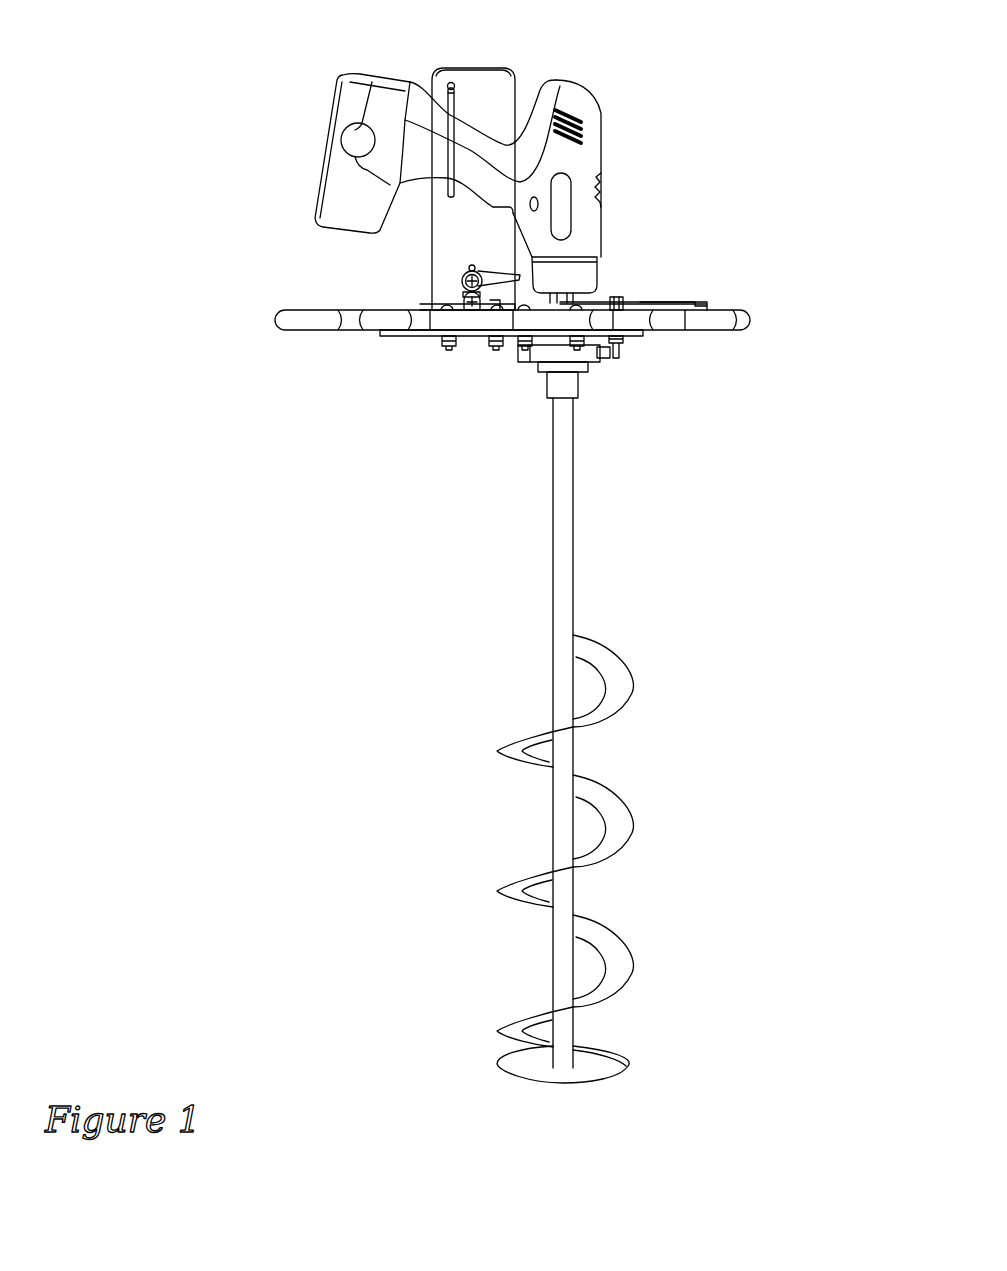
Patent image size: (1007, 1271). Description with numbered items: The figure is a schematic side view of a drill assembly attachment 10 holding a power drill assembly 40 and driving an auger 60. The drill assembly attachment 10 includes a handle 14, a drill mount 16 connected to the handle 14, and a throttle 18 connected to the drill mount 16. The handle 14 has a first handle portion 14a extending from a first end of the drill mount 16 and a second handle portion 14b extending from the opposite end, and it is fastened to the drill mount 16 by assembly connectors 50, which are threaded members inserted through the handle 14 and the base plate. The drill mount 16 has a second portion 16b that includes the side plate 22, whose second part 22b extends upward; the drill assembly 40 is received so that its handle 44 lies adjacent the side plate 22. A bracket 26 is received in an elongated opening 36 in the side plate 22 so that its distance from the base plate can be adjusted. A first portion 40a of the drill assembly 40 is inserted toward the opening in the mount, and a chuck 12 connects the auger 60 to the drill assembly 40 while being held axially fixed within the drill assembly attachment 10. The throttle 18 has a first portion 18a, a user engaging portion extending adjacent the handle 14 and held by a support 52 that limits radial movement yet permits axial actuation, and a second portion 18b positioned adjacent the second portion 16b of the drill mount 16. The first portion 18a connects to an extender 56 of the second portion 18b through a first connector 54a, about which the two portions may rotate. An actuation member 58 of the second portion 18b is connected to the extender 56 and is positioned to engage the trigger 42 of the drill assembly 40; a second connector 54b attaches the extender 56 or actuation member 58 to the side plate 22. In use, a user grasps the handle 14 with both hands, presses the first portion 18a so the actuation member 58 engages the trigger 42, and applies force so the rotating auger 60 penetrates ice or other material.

The drill assembly attachment 10 is at (197, 128).
The chuck 12 is at (567, 300).
The handle 14 is at (285, 313).
The first handle portion 14a is at (737, 313).
The second handle portion 14b is at (300, 323).
The drill mount 16 is at (387, 272).
The second portion of drill mount 16b is at (523, 102).
The throttle 18 is at (607, 287).
The first portion of throttle 18a is at (673, 300).
The second portion of throttle 18b is at (500, 260).
The side plate 22 is at (473, 75).
The second part of side plate 22b is at (442, 77).
The bracket 26 is at (447, 196).
The opening 36 is at (445, 90).
The drill assembly 40 is at (745, 98).
The first portion of drill assembly 40a is at (610, 70).
The trigger 42 is at (510, 218).
The handle of drill assembly 44 is at (487, 218).
The assembly connectors 50 is at (449, 347).
The support 52 is at (614, 298).
The first connector 54a is at (432, 310).
The second connector 54b is at (463, 282).
The extender 56 is at (480, 292).
The actuation member 58 is at (492, 276).
The auger 60 is at (597, 660).